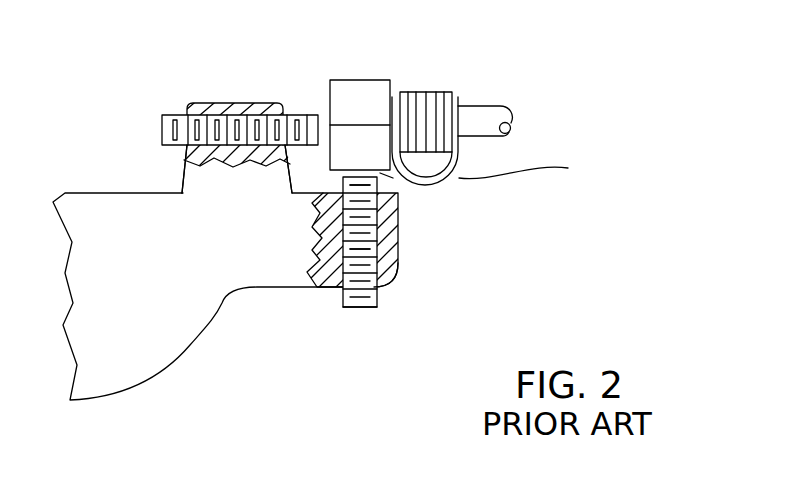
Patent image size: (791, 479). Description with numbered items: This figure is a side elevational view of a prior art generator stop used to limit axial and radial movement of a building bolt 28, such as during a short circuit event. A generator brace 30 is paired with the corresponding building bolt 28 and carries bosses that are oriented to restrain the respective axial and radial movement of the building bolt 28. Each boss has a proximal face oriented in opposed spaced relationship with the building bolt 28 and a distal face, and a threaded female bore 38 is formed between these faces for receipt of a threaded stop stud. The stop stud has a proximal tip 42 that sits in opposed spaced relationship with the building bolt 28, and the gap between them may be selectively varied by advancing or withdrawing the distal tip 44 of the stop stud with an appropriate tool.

The building bolt 28 is at (408, 80).
The generator brace 30 is at (133, 412).
The threaded female bore 38 is at (360, 245).
The proximal tip 42 is at (489, 170).
The distal tip 44 is at (348, 312).